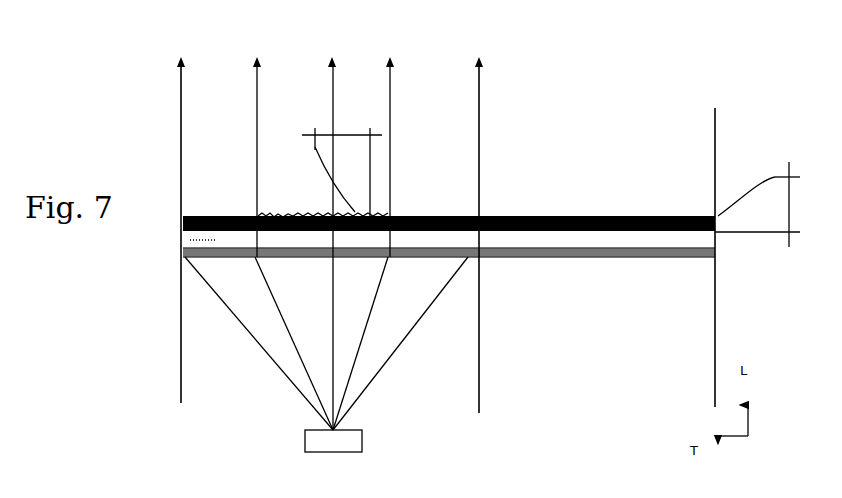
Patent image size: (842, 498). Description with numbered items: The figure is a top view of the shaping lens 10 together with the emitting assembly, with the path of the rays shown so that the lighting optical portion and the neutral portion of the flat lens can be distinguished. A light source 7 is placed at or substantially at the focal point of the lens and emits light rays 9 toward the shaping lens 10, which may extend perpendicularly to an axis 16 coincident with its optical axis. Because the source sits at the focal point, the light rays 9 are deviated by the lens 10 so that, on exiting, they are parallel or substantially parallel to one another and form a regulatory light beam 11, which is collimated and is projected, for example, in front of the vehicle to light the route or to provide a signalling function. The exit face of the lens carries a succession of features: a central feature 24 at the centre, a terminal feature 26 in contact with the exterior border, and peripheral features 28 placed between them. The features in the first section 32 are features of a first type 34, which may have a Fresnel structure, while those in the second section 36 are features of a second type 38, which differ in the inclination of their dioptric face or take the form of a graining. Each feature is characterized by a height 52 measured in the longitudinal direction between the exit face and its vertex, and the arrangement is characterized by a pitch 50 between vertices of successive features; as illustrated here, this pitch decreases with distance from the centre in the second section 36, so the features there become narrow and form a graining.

The light source 7 is at (305, 442).
The light rays 9 is at (290, 318).
The shaping lens 10 is at (382, 249).
The regulatory light beam 11 is at (490, 148).
The axis 16 is at (310, 263).
The central feature 24 is at (338, 257).
The terminal feature 26 is at (713, 265).
The peripheral features 28 is at (458, 257).
The first section 32 is at (182, 247).
The features of a first type 34 is at (227, 217).
The second section 36 is at (508, 258).
The features of a second type 38 is at (600, 258).
The pitch 50 is at (302, 135).
The height 52 is at (790, 205).